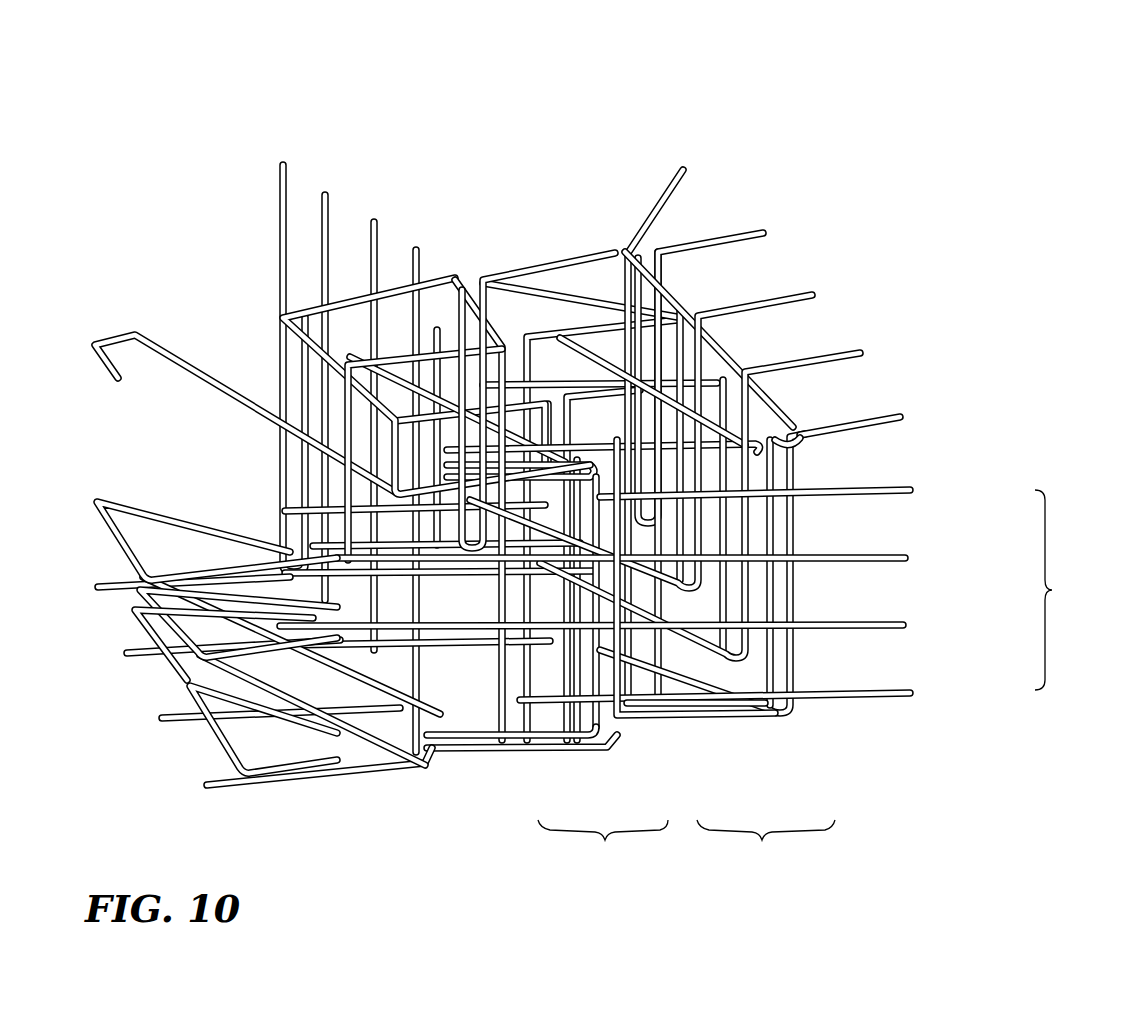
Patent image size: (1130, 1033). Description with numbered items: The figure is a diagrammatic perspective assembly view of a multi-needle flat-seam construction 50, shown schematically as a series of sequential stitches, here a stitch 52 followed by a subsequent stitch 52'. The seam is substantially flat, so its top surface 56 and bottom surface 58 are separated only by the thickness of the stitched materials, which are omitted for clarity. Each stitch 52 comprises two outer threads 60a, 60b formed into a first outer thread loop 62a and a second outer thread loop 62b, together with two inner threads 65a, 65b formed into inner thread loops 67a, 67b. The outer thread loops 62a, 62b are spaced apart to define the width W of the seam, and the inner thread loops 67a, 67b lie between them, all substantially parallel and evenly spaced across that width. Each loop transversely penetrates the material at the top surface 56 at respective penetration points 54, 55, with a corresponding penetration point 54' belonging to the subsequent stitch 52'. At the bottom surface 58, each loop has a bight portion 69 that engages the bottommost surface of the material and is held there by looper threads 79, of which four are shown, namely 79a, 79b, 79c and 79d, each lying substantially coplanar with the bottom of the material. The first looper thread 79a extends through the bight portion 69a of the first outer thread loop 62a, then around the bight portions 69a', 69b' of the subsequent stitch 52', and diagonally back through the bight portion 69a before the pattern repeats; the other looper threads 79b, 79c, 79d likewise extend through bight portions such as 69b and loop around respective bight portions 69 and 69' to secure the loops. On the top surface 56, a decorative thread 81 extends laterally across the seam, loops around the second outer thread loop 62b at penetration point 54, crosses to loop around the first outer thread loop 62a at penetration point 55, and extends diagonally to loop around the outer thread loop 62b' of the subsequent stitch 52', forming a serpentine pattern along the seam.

The flat-seam construction 50 is at (856, 130).
The stitch 52 is at (628, 405).
The subsequent stitch 52' is at (521, 427).
The penetration point 54 is at (645, 429).
The penetration point 54' is at (425, 456).
The penetration point 55 is at (802, 444).
The top surface 56 is at (265, 312).
The bottom surface 58 is at (415, 798).
The outer thread 60a is at (900, 422).
The outer thread 60b is at (758, 233).
The first outer thread loop 62a is at (800, 438).
The second outer thread loop 62b is at (729, 338).
The outer thread loop of the subsequent stitch 62b' is at (538, 375).
The inner thread 65a is at (862, 352).
The inner thread 65b is at (812, 292).
The inner thread loop 67a is at (738, 352).
The inner thread loop 67b is at (685, 296).
The bight portion 69 is at (766, 843).
The bight portion of the subsequent stitch 69' is at (603, 843).
The bight portion 69a is at (720, 626).
The bight portion 69a' is at (546, 776).
The bight portion 69b is at (696, 758).
The bight portion 69b' is at (511, 772).
The looper thread 79 is at (1060, 590).
The first looper thread 79a is at (908, 692).
The looper thread 79b is at (905, 630).
The looper thread 79c is at (908, 562).
The looper thread 79d is at (912, 495).
The decorative thread 81 is at (115, 328).
The width W is at (200, 815).